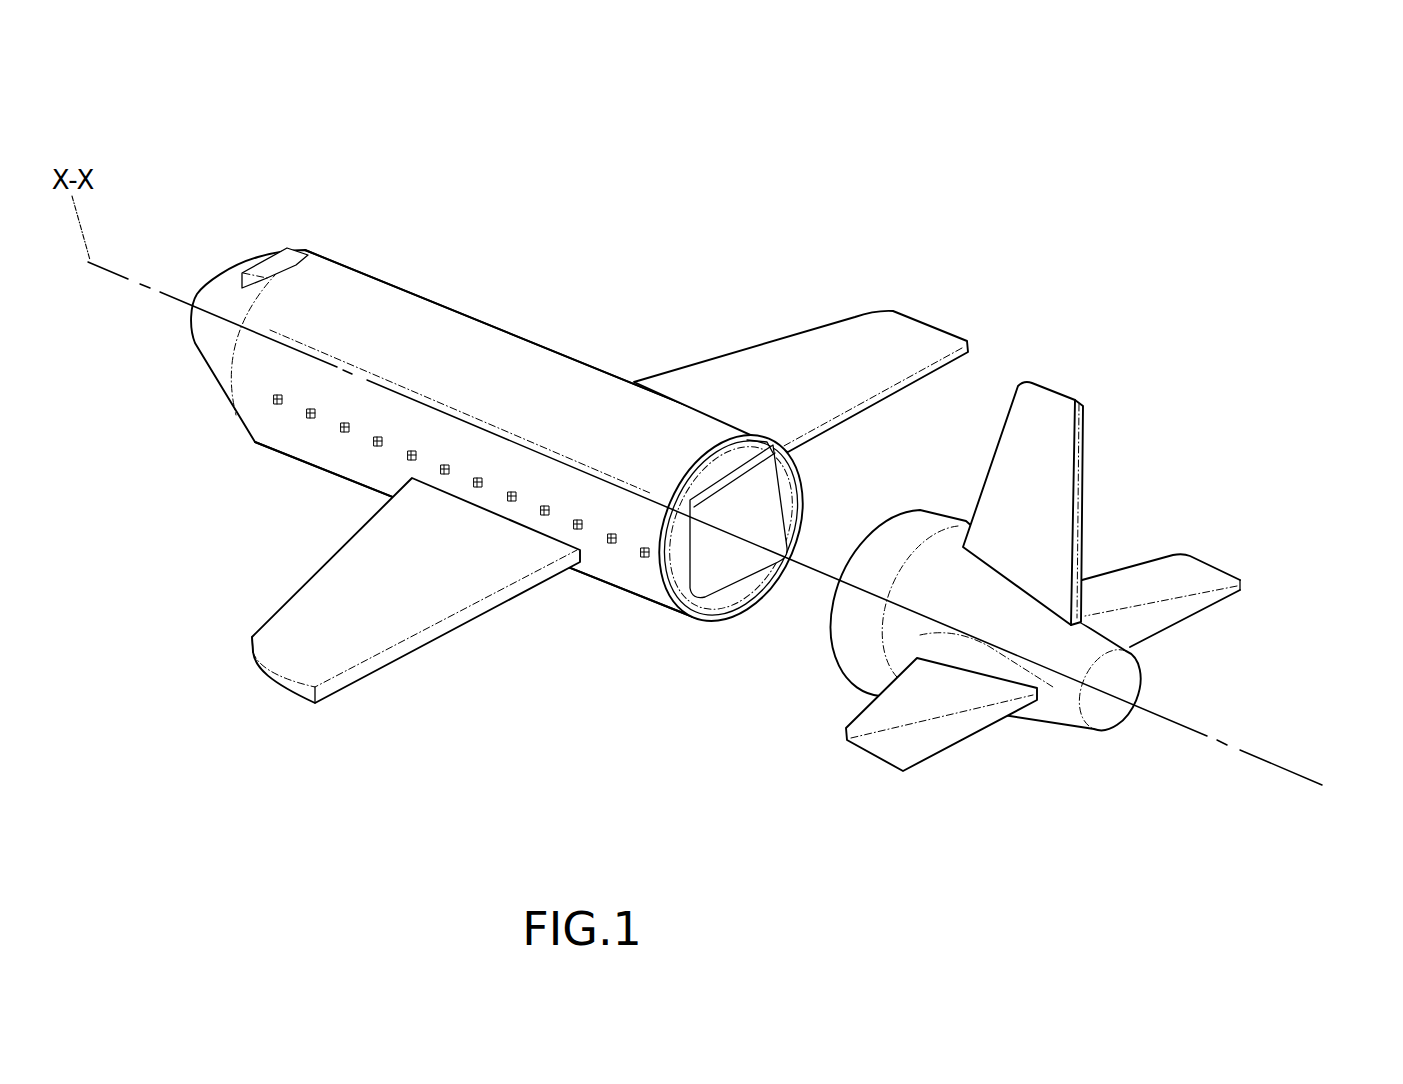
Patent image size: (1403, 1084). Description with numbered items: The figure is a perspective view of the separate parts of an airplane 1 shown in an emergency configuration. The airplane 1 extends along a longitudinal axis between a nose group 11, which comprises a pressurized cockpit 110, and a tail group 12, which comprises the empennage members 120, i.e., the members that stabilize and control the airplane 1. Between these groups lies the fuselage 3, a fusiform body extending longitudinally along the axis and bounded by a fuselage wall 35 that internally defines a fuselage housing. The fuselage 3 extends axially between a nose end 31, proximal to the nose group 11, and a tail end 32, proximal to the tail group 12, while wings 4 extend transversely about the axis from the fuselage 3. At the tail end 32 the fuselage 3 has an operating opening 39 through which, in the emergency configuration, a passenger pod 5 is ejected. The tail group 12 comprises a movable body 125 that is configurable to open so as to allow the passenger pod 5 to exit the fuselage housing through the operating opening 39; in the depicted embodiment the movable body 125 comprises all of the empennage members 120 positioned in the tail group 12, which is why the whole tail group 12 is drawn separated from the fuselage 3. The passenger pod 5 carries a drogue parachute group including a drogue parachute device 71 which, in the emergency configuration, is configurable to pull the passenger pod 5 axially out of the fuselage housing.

The airplane 1 is at (758, 464).
The fuselage 3 is at (474, 438).
The wings 4 is at (825, 350).
The passenger pod 5 is at (706, 600).
The nose group 11 is at (758, 464).
The tail group 12 is at (1110, 569).
The nose end 31 is at (365, 265).
The tail end 32 is at (612, 600).
The fuselage wall 35 is at (505, 365).
The operating opening 39 is at (771, 632).
The drogue parachute device 71 is at (727, 557).
The pressurized cockpit 110 is at (270, 248).
The empennage members 120 is at (1050, 437).
The movable body 125 is at (1007, 657).